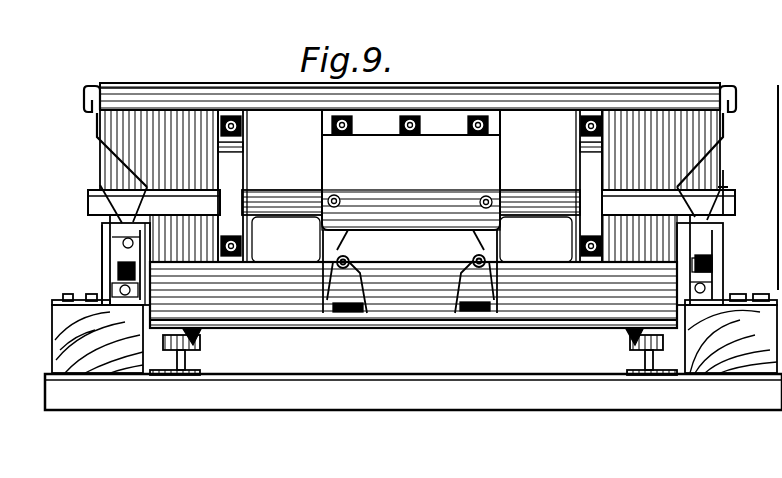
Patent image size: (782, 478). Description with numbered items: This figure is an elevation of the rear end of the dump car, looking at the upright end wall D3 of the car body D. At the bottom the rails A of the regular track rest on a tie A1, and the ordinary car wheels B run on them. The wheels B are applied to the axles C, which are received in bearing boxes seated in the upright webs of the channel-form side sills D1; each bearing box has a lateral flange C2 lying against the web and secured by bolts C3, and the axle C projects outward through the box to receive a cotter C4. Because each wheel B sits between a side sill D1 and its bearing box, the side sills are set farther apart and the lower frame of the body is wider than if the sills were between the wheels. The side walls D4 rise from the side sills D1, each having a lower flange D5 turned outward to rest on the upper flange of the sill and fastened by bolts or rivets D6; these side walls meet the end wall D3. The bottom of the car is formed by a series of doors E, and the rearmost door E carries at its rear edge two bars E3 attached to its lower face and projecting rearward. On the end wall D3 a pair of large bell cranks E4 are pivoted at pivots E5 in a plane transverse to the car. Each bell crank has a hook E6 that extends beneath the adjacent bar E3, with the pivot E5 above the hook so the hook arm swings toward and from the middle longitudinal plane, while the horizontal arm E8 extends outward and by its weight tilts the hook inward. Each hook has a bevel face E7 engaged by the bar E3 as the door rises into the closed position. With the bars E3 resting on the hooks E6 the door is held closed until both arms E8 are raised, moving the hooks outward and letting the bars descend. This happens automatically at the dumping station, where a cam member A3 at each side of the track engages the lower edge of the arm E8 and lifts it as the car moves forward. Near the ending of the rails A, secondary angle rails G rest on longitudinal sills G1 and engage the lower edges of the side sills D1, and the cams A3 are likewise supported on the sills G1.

The car body D is at (493, 83).
The side sill D1 is at (146, 243).
The upright end wall D3 is at (200, 120).
The side wall D4 is at (98, 122).
The lower flange D5 is at (153, 187).
The bolts or rivets D6 is at (100, 185).
The axle C is at (107, 270).
The lateral flange C2 is at (118, 290).
The bolt C3 is at (122, 240).
The cotter C4 is at (134, 270).
The rail A is at (180, 355).
The tie A1 is at (243, 402).
The cam member A3 is at (103, 277).
The car wheel B is at (195, 338).
The door E is at (412, 328).
The bar or arm E3 is at (460, 312).
The bell crank E4 is at (293, 187).
The pivot E5 is at (345, 188).
The hook E6 is at (318, 312).
The bevel face E7 is at (336, 312).
The horizontal arm E8 is at (647, 172).
The secondary rail G is at (703, 320).
The longitudinal sill G1 is at (70, 360).